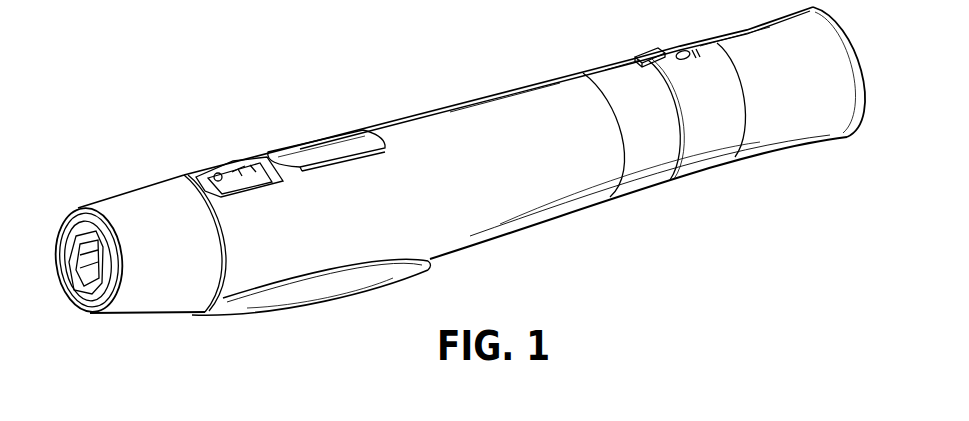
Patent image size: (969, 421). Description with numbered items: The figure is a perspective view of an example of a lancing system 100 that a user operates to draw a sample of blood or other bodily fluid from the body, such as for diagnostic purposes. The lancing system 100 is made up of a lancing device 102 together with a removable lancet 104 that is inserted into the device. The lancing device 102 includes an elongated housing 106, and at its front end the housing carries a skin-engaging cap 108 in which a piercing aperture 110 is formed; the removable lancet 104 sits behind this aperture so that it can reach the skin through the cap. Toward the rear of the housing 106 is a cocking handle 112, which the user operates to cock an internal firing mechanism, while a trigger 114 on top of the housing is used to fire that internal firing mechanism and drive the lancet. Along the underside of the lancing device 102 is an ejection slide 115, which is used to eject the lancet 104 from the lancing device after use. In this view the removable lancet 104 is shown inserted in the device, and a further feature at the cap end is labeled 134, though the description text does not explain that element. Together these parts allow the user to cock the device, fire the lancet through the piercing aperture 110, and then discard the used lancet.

The lancing system 100 is at (447, 200).
The lancing device 102 is at (490, 240).
The removable lancet 104 is at (78, 262).
The housing 106 is at (500, 93).
The skin-engaging cap 108 is at (143, 314).
The piercing aperture 110 is at (77, 228).
The cocking handle 112 is at (768, 153).
The trigger 114 is at (333, 130).
The ejection slide 115 is at (362, 300).
The nose face rim 134 is at (84, 314).